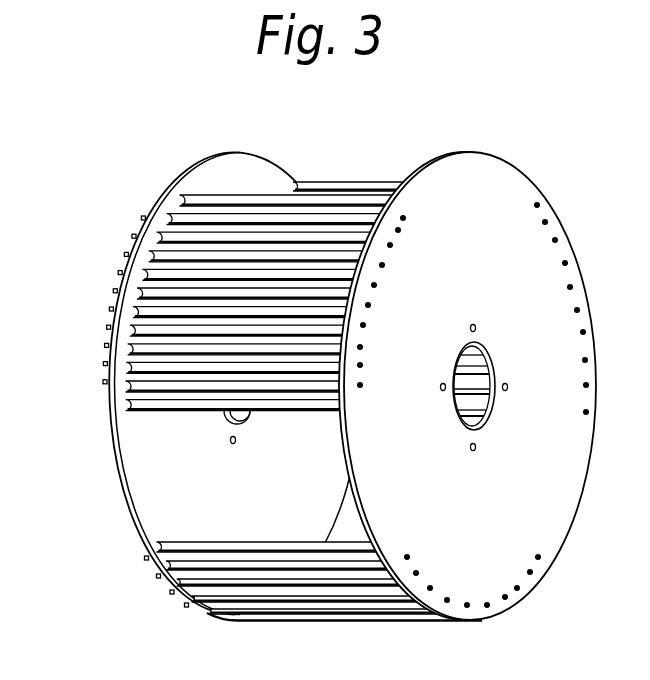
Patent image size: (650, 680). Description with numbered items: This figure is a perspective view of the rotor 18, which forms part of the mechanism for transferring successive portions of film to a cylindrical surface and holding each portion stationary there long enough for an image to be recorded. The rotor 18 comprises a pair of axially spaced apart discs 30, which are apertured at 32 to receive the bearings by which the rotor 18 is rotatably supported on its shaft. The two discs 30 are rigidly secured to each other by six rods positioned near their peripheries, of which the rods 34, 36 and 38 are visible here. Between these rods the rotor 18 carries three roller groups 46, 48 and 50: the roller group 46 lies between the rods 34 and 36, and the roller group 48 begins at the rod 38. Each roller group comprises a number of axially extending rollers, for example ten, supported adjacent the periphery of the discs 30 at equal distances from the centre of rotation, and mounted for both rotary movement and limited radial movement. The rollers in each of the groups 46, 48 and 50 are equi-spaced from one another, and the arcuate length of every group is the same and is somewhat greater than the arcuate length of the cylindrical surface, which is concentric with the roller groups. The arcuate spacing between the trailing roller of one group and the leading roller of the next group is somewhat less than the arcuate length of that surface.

The rotor 18 is at (302, 391).
The discs 30 is at (308, 391).
The apertures 32 is at (376, 411).
The rod 34 is at (212, 197).
The rod 36 is at (130, 412).
The rod 38 is at (178, 547).
The roller group 46 is at (118, 294).
The roller group 48 is at (289, 629).
The roller group 50 is at (474, 378).